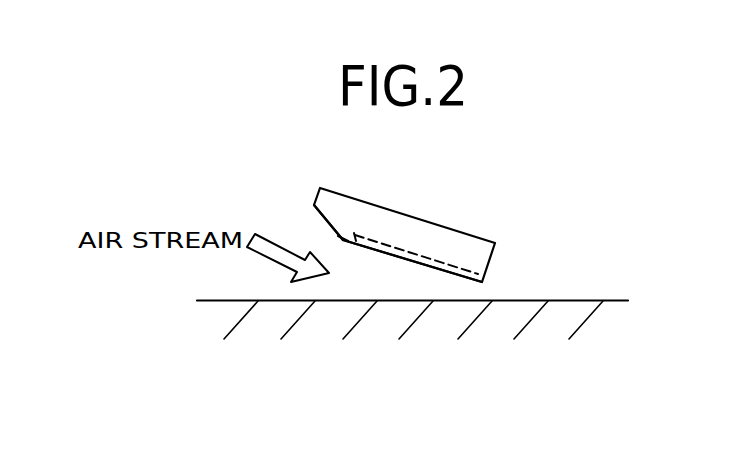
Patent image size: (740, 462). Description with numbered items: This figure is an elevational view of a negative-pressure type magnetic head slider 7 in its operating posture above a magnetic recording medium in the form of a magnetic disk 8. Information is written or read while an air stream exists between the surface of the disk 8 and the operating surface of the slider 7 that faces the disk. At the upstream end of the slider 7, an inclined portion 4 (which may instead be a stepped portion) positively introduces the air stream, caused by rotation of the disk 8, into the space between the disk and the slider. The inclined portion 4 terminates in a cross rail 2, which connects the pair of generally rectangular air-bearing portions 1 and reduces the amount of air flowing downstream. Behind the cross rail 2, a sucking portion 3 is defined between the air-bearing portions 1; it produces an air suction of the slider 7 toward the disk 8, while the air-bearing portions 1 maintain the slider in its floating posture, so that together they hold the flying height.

The air-bearing portion 1 is at (412, 262).
The cross rail 2 is at (343, 241).
The sucking portion 3 is at (441, 259).
The inclined portion 4 is at (326, 221).
The magnetic head slider 7 is at (466, 211).
The magnetic disk 8 is at (570, 308).